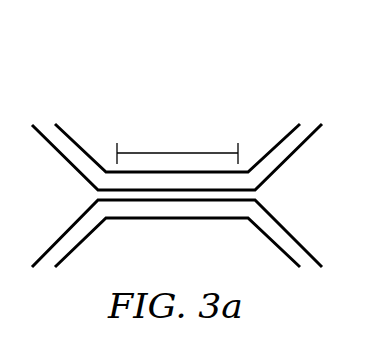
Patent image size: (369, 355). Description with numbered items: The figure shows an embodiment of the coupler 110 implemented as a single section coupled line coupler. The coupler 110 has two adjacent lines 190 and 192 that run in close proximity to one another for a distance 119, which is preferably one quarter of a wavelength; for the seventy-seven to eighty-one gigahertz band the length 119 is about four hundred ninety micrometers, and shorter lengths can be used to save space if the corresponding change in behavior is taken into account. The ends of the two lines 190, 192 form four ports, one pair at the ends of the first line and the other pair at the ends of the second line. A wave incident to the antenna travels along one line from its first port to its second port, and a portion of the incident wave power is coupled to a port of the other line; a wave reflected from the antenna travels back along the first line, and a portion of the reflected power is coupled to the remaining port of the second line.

The coupler 110 is at (180, 156).
The distance 119 is at (182, 153).
The adjacent line 190 is at (290, 235).
The adjacent line 192 is at (282, 142).